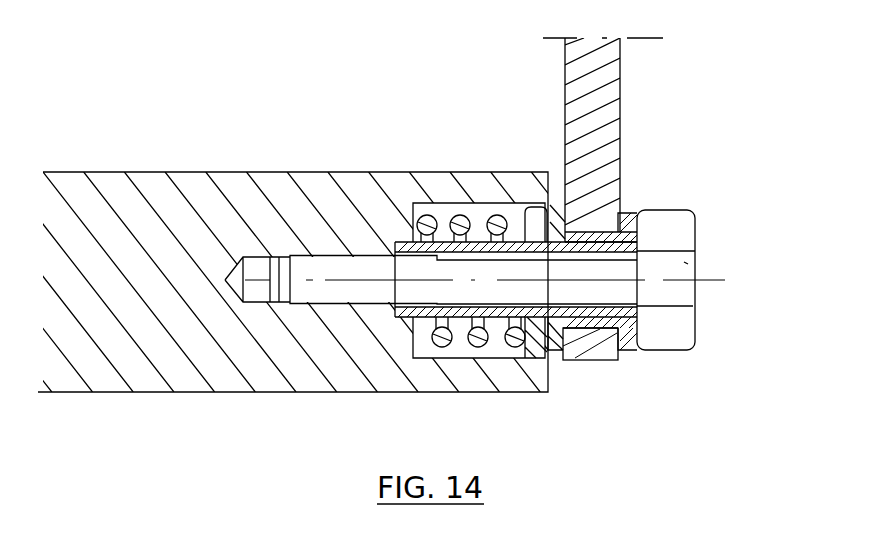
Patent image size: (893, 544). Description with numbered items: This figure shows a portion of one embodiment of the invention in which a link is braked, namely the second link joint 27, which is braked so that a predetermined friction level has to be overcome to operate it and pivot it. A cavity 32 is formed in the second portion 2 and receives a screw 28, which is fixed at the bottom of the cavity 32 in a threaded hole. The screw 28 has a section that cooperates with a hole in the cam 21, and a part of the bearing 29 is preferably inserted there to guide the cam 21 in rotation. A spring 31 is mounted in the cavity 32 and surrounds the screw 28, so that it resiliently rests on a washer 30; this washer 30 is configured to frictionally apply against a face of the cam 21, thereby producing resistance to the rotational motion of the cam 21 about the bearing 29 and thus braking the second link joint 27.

The second portion 2 is at (171, 212).
The cam 21 is at (629, 72).
The second link joint 27 is at (692, 176).
The screw 28 is at (696, 253).
The bearing 29 is at (610, 330).
The washer 30 is at (592, 218).
The spring 31 is at (478, 205).
The cavity 32 is at (478, 343).